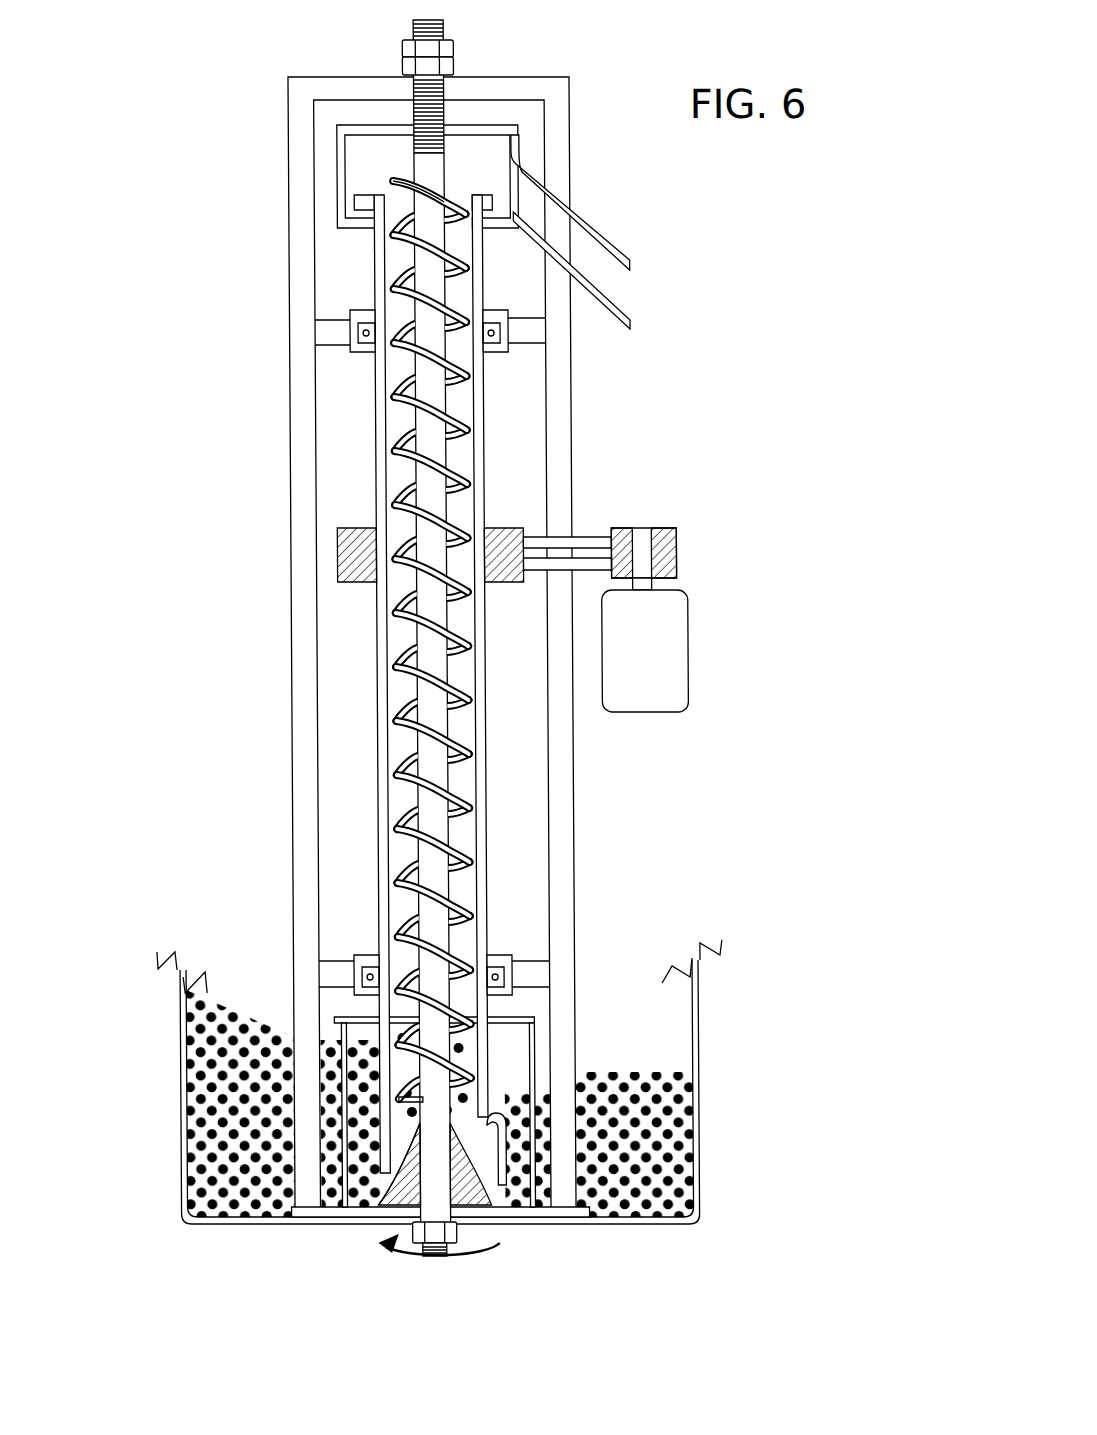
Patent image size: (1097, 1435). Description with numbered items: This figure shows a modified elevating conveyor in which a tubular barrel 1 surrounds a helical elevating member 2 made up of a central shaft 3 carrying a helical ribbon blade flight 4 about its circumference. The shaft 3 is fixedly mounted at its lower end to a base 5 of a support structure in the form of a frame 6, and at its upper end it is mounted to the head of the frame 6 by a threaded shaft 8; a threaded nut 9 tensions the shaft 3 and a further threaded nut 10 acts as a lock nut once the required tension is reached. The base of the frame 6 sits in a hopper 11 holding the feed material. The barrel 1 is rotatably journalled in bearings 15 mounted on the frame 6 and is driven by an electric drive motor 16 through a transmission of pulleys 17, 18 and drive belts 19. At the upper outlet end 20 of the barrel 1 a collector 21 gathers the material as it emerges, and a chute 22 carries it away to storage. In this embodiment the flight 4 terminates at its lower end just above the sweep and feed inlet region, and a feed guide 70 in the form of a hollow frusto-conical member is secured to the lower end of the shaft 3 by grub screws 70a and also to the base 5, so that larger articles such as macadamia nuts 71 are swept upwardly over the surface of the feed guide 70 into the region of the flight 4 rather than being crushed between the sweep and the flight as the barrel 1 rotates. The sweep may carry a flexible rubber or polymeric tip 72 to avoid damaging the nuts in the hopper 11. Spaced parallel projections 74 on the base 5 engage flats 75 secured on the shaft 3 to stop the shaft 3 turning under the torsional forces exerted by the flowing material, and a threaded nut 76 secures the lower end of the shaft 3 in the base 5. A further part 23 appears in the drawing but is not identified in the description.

The tubular barrel 1 is at (481, 410).
The helical elevating member 2 is at (438, 638).
The central shaft 3 is at (424, 705).
The helical ribbon blade flight 4 is at (470, 483).
The base 5 is at (582, 1210).
The frame 6 is at (568, 825).
The threaded shaft 8 is at (411, 35).
The threaded nut 9 is at (450, 63).
The threaded nut 10 is at (447, 50).
The hopper 11 is at (692, 1028).
The bearings 15 is at (346, 315).
The electric drive motor 16 is at (656, 650).
The pulley 17 is at (674, 556).
The pulley 18 is at (587, 538).
The drive belts 19 is at (668, 526).
The upper outlet end 20 is at (454, 195).
The collector 21 is at (338, 187).
The chute 22 is at (602, 235).
The cover plate 23 is at (528, 1043).
The feed guide 70 is at (384, 1195).
The grub screws 70a is at (387, 1147).
The macadamia nuts 71 is at (244, 1136).
The flexible tip 72 is at (492, 1120).
The spaced parallel projections 74 is at (465, 1180).
The flats 75 is at (470, 1223).
The threaded nut 76 is at (405, 1258).